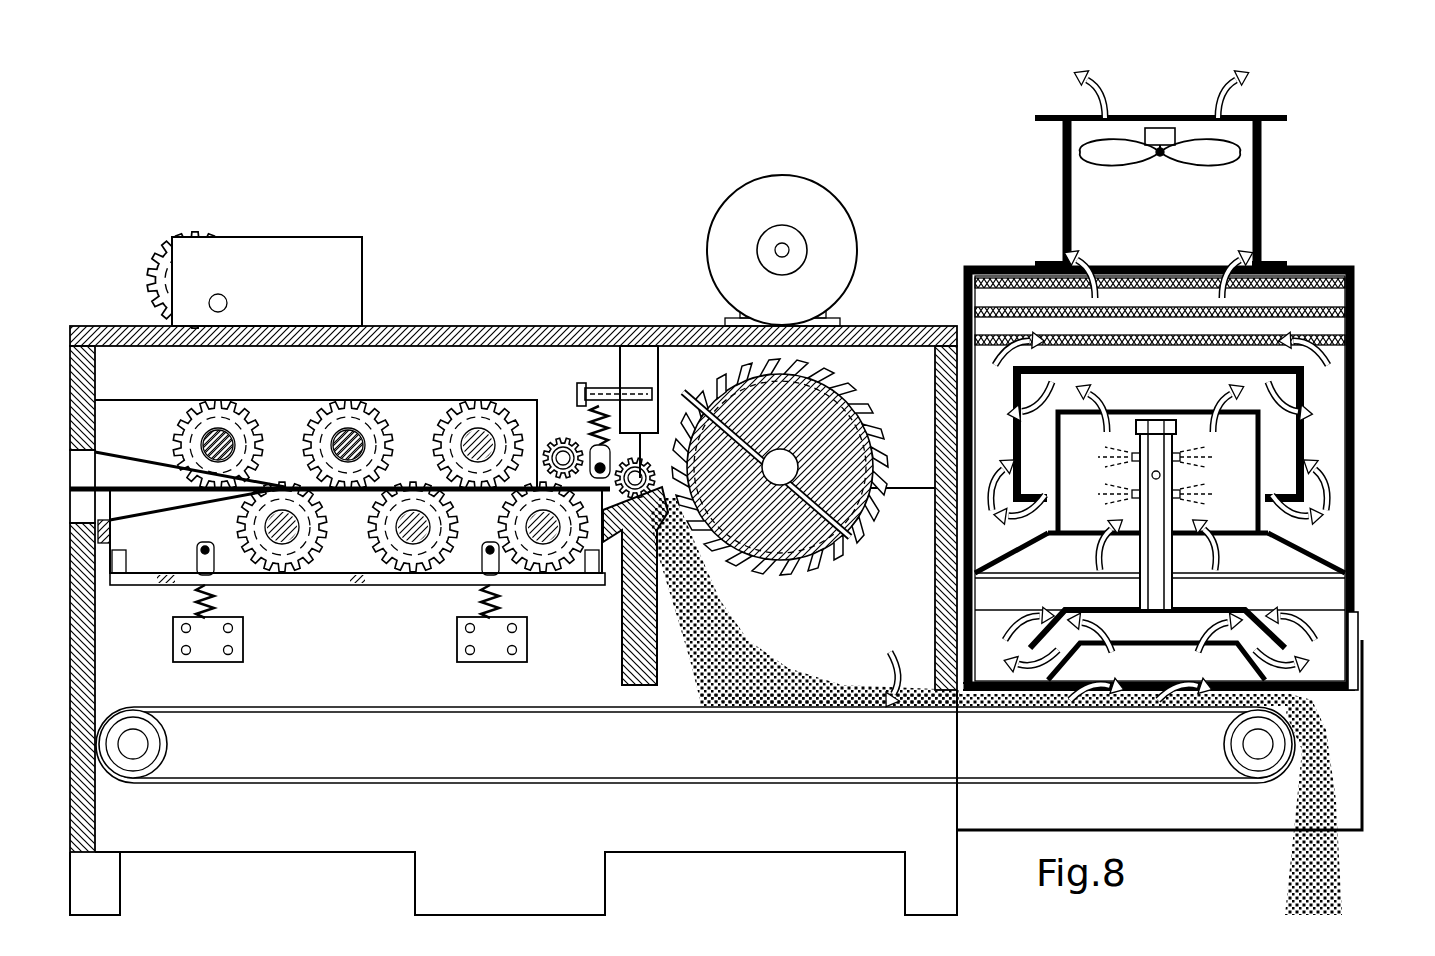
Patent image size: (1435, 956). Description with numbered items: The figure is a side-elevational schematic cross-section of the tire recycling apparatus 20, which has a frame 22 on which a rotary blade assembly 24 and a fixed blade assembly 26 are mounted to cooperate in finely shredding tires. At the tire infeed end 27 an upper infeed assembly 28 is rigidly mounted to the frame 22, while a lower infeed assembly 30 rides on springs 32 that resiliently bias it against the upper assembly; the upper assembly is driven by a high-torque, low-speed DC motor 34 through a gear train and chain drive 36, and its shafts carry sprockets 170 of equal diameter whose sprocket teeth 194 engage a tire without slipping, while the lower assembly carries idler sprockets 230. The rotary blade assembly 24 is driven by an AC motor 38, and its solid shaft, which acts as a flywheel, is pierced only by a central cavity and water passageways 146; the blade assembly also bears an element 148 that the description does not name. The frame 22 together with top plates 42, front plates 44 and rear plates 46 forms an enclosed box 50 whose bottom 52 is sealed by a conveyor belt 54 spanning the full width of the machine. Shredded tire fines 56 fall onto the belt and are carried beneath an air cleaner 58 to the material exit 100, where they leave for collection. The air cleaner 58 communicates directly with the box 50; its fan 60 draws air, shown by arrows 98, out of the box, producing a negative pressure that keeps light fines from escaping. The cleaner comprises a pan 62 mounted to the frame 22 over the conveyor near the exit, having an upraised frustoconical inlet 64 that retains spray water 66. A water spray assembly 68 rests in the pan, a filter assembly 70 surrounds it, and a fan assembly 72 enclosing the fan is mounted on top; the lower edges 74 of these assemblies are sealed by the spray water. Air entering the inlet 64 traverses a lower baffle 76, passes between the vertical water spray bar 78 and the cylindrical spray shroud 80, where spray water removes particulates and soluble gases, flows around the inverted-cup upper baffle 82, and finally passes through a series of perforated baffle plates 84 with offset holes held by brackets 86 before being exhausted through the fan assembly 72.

The tire recycling apparatus 20 is at (483, 230).
The frame 22 is at (620, 355).
The rotary blade assembly 24 is at (797, 464).
The fixed blade assembly 26 is at (618, 560).
The tire infeed end 27 is at (70, 590).
The upper infeed assembly 28 is at (480, 378).
The lower infeed assembly 30 is at (315, 580).
The springs 32 is at (213, 600).
The DC motor 34 is at (305, 237).
The gear train and chain drive 36 is at (152, 262).
The AC motor 38 is at (712, 216).
The top plates 42 is at (468, 326).
The front plates 44 is at (95, 663).
The rear plates 46 is at (933, 487).
The enclosed box 50 is at (113, 326).
The bottom 52 is at (110, 800).
The conveyor belt 54 is at (487, 788).
The tire fines 56 is at (750, 628).
The air cleaner 58 is at (1312, 262).
The fan 60 is at (1162, 128).
The pan 62 is at (1350, 690).
The frustoconical inlet 64 is at (1232, 700).
The spray water 66 is at (1180, 456).
The water spray assembly 68 is at (1305, 555).
The filter assembly 70 is at (1355, 375).
The fan assembly 72 is at (1262, 200).
The lower edges 74 is at (965, 712).
The lower baffle 76 is at (1268, 635).
The water spray bar 78 is at (1158, 420).
The spray shroud 80 is at (1262, 445).
The upper baffle 82 is at (1300, 410).
The perforated baffle plates 84 is at (1325, 310).
The brackets 86 is at (1350, 348).
The arrows 98 is at (890, 652).
The material exit 100 is at (1342, 826).
The water passageways 146 is at (824, 396).
The cutter hub 148 is at (796, 470).
The sprockets 170 is at (245, 410).
The sprocket teeth 194 is at (195, 405).
The idler sprockets 230 is at (368, 522).